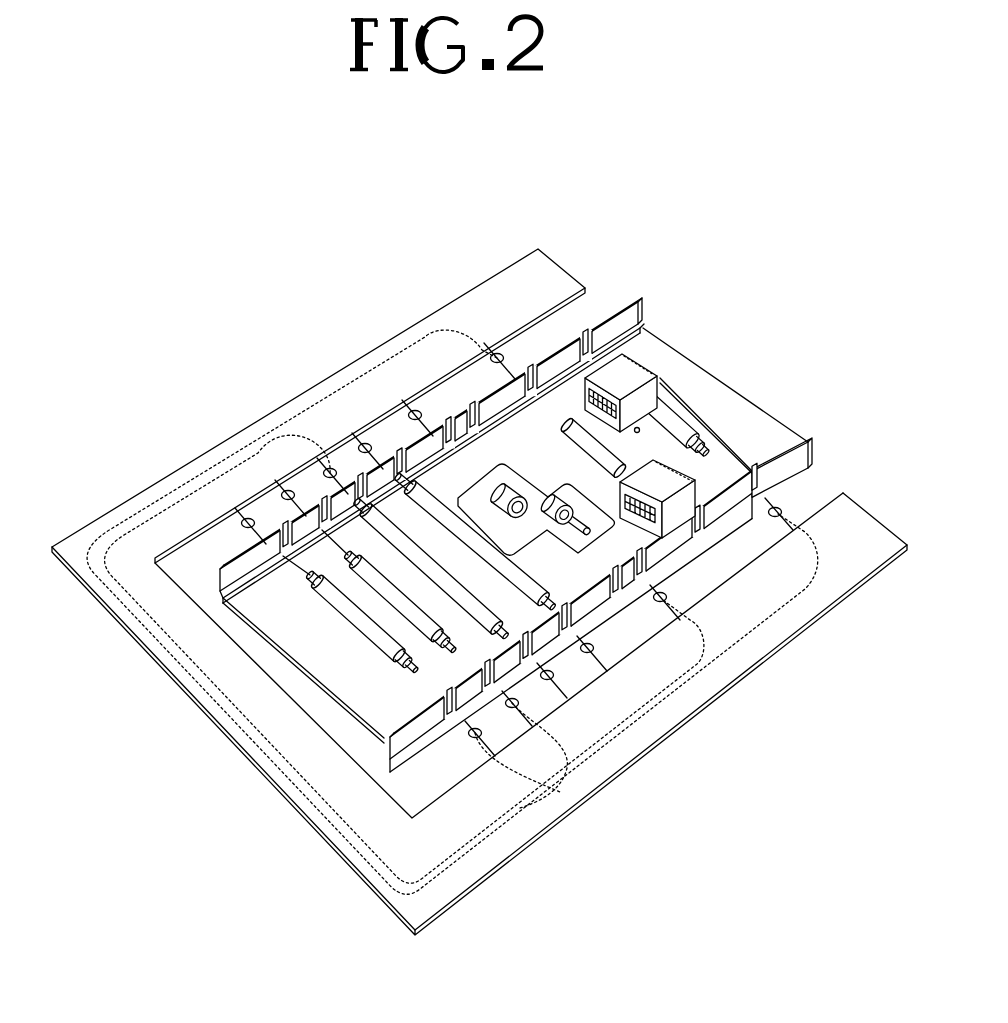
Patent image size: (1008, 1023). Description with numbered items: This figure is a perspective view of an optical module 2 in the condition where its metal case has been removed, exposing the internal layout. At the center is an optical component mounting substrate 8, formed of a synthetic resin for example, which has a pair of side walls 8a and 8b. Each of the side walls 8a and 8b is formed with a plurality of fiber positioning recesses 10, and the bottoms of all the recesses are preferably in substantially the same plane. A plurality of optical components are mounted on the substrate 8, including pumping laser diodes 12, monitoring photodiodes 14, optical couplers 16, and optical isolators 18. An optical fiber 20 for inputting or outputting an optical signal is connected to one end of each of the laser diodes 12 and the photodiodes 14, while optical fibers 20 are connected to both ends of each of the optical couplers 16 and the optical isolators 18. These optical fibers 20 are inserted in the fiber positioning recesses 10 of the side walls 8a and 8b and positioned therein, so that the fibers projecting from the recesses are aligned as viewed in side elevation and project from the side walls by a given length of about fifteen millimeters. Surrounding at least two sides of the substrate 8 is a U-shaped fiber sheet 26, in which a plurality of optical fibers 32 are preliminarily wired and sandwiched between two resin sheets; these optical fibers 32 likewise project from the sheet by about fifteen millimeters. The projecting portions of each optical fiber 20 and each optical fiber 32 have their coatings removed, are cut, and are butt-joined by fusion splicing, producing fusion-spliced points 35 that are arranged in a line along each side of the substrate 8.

The optical module 2 is at (722, 342).
The optical component mounting substrate 8 is at (530, 511).
The side wall 8a is at (638, 301).
The side wall 8b is at (802, 440).
The fiber positioning recesses 10 is at (583, 338).
The pumping laser diodes 12 is at (632, 366).
The monitoring photodiodes 14 is at (511, 496).
The optical couplers 16 is at (485, 605).
The optical isolators 18 is at (400, 601).
The optical fibers 20 is at (332, 470).
The U-shaped fiber sheet 26 is at (703, 711).
The optical fibers 32 is at (125, 500).
The fusion-spliced points 35 is at (286, 494).